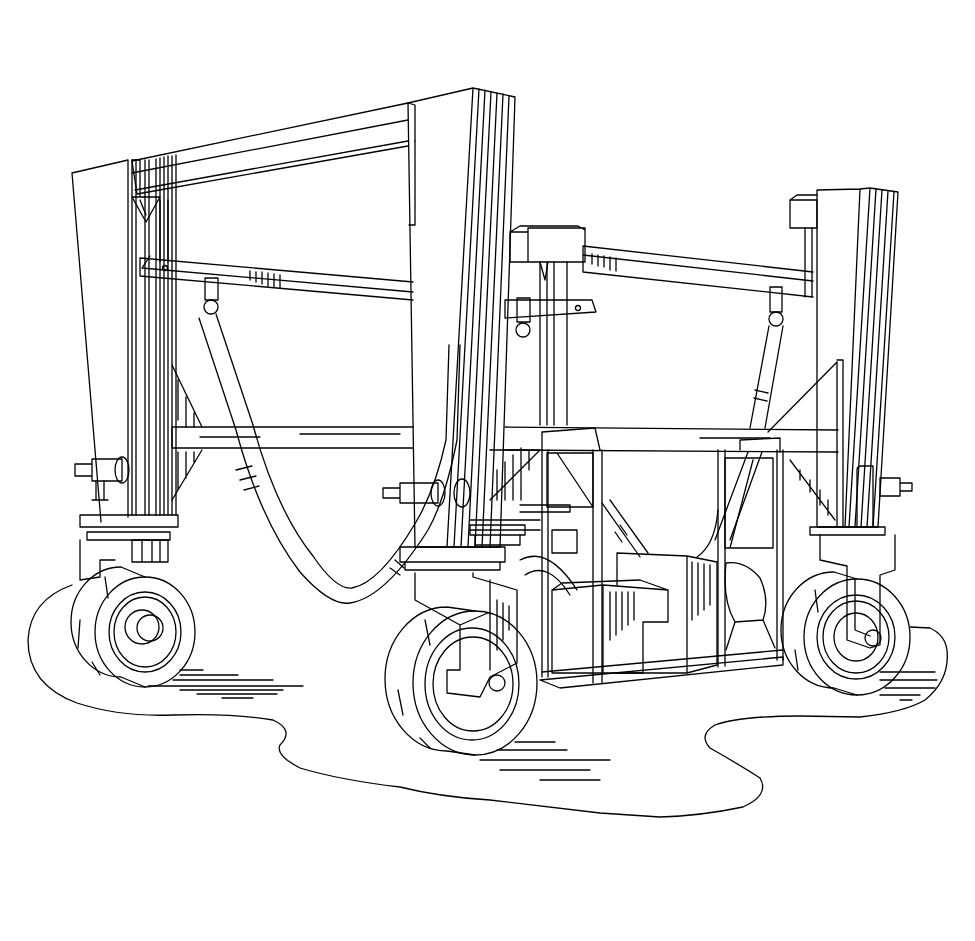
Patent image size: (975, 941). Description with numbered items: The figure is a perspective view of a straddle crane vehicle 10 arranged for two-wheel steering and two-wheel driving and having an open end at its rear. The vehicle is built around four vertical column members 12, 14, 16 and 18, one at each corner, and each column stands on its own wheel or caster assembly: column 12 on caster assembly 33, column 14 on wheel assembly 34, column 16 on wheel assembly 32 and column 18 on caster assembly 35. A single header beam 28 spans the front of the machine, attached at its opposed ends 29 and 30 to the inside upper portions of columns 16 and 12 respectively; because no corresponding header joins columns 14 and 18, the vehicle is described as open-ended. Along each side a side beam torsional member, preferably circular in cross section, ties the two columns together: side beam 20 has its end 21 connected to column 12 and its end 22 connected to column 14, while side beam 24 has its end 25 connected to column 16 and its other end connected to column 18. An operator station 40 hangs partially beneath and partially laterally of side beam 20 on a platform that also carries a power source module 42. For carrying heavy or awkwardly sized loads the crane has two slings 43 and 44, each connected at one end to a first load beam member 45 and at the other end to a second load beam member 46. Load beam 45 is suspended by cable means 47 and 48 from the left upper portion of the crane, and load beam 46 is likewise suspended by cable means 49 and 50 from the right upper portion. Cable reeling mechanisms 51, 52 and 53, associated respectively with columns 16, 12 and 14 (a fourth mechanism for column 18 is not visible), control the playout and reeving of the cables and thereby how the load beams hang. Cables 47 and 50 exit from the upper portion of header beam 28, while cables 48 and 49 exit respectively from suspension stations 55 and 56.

The straddle crane vehicle 10 is at (695, 70).
The vertical column member 12 is at (495, 150).
The vertical column member 14 is at (880, 256).
The vertical column member 16 is at (90, 246).
The vertical column member 18 is at (560, 377).
The side beam torsional member 20 is at (668, 434).
The end of side beam 20 21 is at (502, 437).
The end of side beam 20 22 is at (848, 446).
The side beam torsional member 24 is at (326, 432).
The end of side beam 24 25 is at (183, 462).
The header beam 28 is at (292, 148).
The end of header beam 29 is at (140, 186).
The end of header beam 30 is at (406, 112).
The wheel or caster assembly 32 is at (135, 695).
The wheel or caster assembly 33 is at (388, 737).
The wheel or caster assembly 34 is at (846, 698).
The wheel or caster assembly 35 is at (580, 566).
The operator station 40 is at (750, 680).
The power source module 42 is at (622, 672).
The sling 43 is at (314, 577).
The sling 44 is at (760, 368).
The first load beam member 45 is at (312, 278).
The second load beam member 46 is at (694, 262).
The cable means 47 is at (168, 228).
The cable means 48 is at (566, 284).
The cable means 49 is at (806, 250).
The cable means 50 is at (408, 192).
The cable reeling mechanism 51 is at (84, 464).
The cable reeling mechanism 52 is at (400, 472).
The cable reeling mechanism 53 is at (892, 504).
The suspension station 55 is at (563, 236).
The suspension station 56 is at (802, 208).